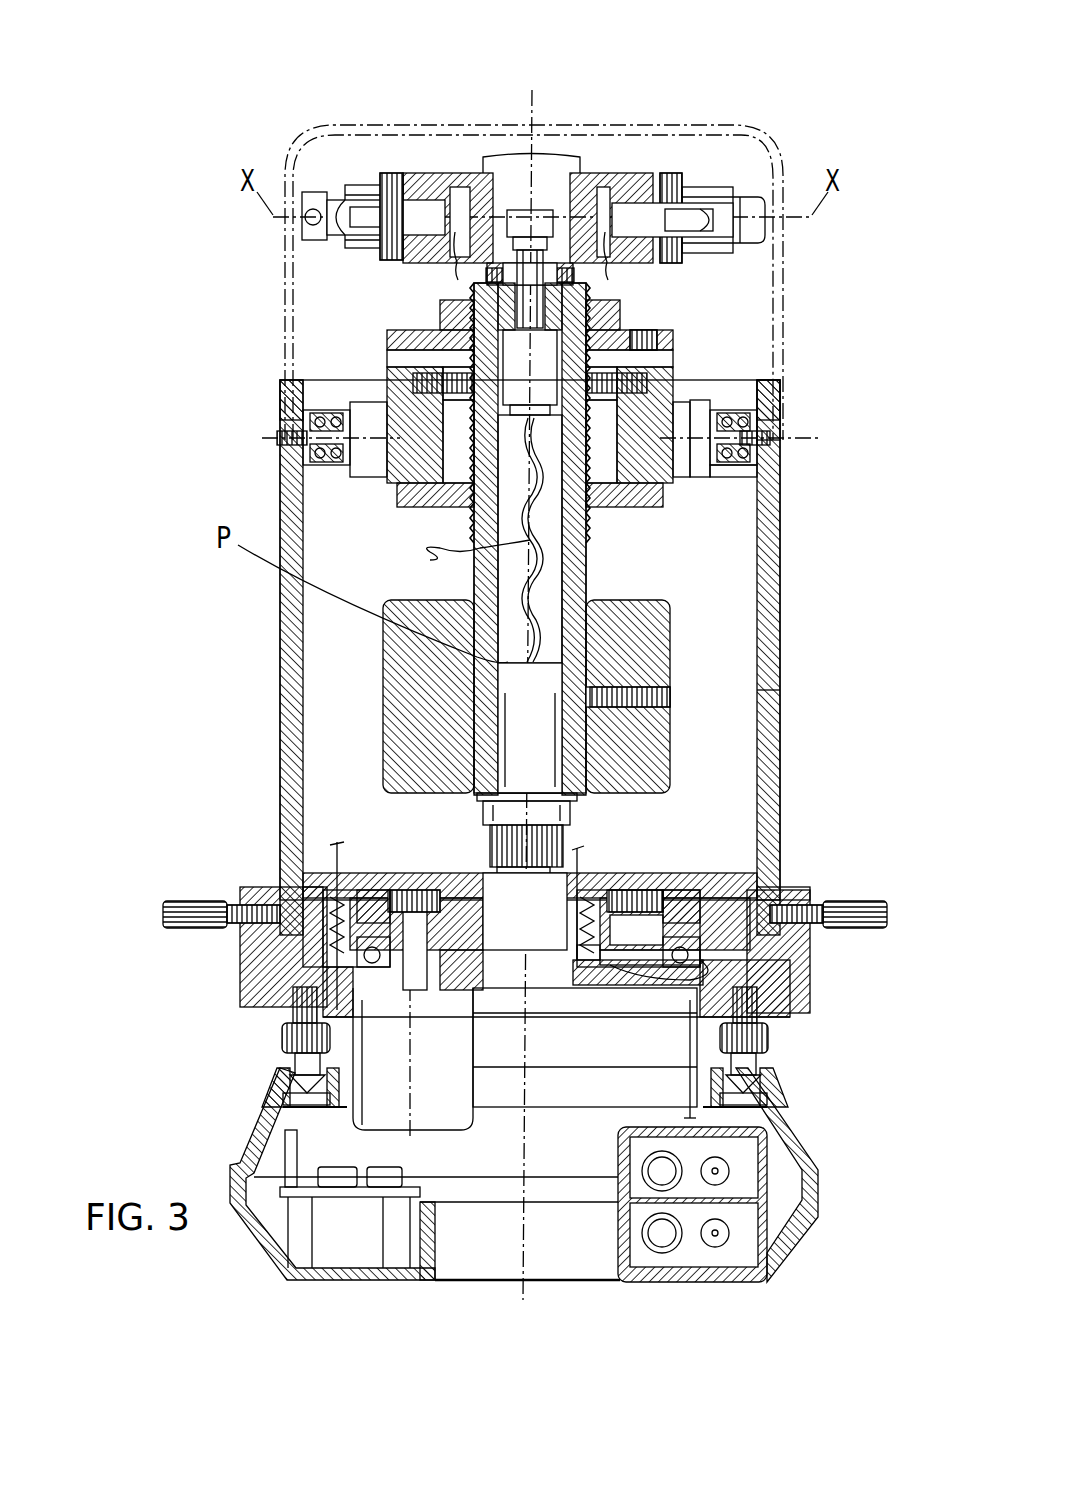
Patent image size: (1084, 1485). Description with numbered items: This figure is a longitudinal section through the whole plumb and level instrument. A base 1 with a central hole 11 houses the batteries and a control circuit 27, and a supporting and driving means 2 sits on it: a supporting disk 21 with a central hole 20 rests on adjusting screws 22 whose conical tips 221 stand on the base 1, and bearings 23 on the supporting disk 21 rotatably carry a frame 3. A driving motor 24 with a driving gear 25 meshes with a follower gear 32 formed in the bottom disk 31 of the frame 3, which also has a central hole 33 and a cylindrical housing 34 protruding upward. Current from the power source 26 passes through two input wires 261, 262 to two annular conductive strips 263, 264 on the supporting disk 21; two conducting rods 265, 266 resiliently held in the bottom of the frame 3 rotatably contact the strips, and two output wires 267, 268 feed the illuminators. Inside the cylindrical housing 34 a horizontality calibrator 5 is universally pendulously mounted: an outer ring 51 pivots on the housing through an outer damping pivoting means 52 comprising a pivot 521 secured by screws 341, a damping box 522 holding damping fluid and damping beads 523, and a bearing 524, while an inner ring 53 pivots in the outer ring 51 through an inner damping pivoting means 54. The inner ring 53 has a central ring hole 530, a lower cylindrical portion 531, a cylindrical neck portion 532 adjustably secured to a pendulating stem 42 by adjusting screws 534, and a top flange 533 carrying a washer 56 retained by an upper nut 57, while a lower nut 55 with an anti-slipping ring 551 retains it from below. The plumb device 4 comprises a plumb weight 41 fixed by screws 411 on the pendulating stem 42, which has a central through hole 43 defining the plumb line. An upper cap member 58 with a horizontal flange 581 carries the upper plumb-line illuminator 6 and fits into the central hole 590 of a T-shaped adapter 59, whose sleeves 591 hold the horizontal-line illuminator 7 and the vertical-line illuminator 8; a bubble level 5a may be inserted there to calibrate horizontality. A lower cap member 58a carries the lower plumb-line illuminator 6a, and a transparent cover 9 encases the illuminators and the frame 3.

The base 1 is at (809, 1131).
The central hole 11 is at (613, 1245).
The supporting and driving means 2 is at (279, 1019).
The central hole 20 is at (560, 1000).
The supporting disk 21 is at (786, 978).
The adjusting screws 22 is at (772, 1041).
The conical tip 221 is at (765, 1090).
The bearings 23 is at (752, 920).
The driving motor 24 is at (385, 1082).
The driving gear 25 is at (398, 875).
The power source 26 is at (740, 1189).
The input wire 261 is at (640, 935).
The input wire 262 is at (243, 982).
The annular conductive strip 263 is at (685, 872).
The annular conductive strip 264 is at (240, 950).
The conducting rod 265 is at (592, 935).
The conducting rod 266 is at (285, 897).
The output wire 267 is at (585, 880).
The output wire 268 is at (340, 878).
The control circuit 27 is at (358, 1200).
The frame 3 is at (781, 758).
The bottom disk 31 is at (732, 900).
The follower gear 32 is at (755, 770).
The central hole 33 is at (525, 911).
The cylindrical housing 34 is at (768, 600).
The screws 341 is at (800, 897).
The plumb device 4 is at (532, 150).
The plumb weight 41 is at (657, 603).
The screws 411 is at (672, 697).
The pendulating stem 42 is at (590, 578).
The central through hole 43 is at (566, 560).
The horizontality calibrator 5 is at (745, 375).
The bubble level 5a is at (580, 140).
The outer ring 51 is at (745, 405).
The outer damping pivoting means 52 is at (305, 403).
The pivot 521 is at (742, 452).
The damping box 522 is at (760, 437).
The damping beads 523 is at (745, 480).
The bearing 524 is at (735, 507).
The inner ring 53 is at (700, 396).
The central ring hole 530 is at (395, 460).
The lower cylindrical portion 531 is at (407, 490).
The cylindrical neck portion 532 is at (408, 376).
The top flange 533 is at (395, 362).
The adjusting screws 534 is at (395, 375).
The inner damping pivoting means 54 is at (660, 345).
The lower nut 55 is at (658, 504).
The anti-slipping ring 551 is at (440, 548).
The washer 56 is at (605, 340).
The upper nut 57 is at (612, 306).
The upper cap member 58 is at (470, 185).
The lower cap member 58a is at (550, 687).
The T-shaped adapter 59 is at (622, 176).
The horizontal flange 581 is at (455, 272).
The central hole 590 is at (492, 152).
The sleeves 591 is at (393, 176).
The upper plumb-line illuminator 6 is at (555, 203).
The lower plumb-line illuminator 6a is at (518, 880).
The horizontal-line illuminator 7 is at (316, 186).
The vertical-line illuminator 8 is at (727, 181).
The transparent cover 9 is at (791, 276).